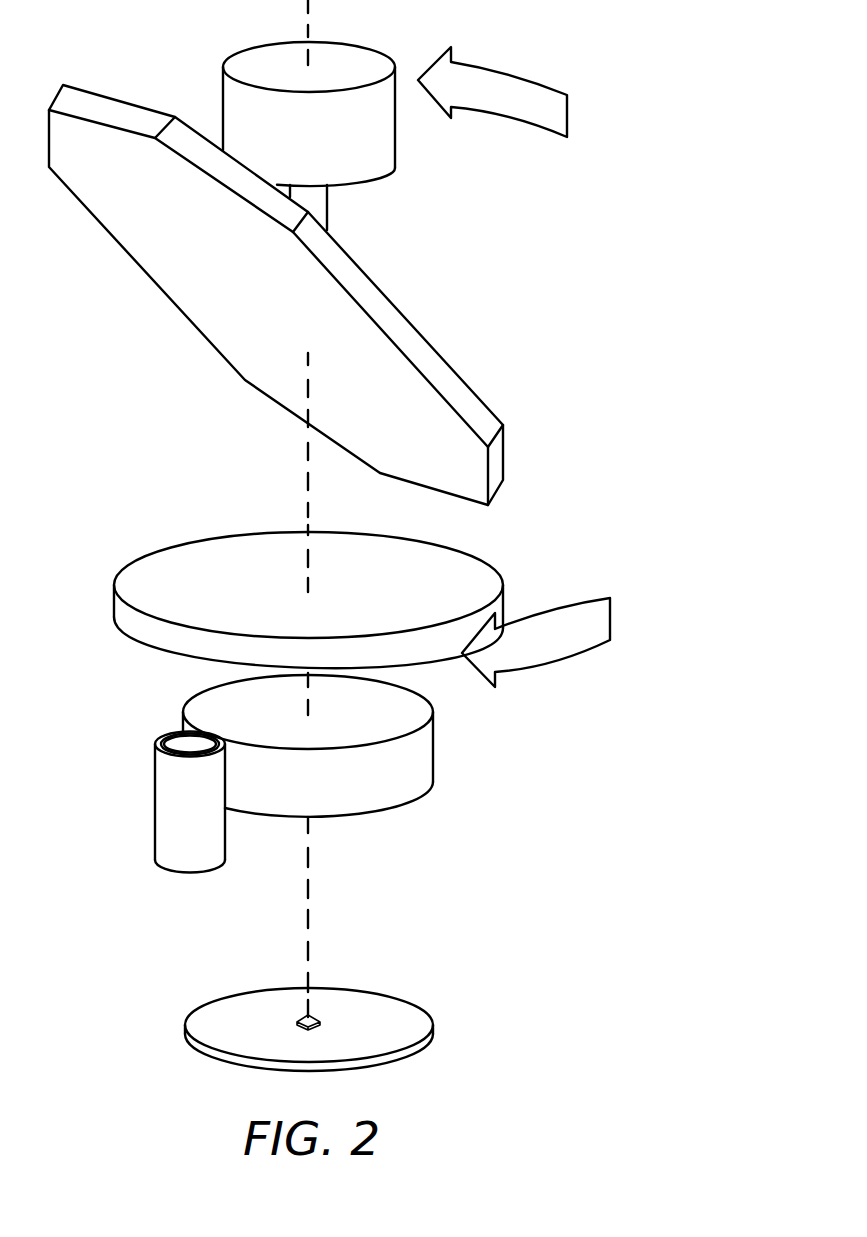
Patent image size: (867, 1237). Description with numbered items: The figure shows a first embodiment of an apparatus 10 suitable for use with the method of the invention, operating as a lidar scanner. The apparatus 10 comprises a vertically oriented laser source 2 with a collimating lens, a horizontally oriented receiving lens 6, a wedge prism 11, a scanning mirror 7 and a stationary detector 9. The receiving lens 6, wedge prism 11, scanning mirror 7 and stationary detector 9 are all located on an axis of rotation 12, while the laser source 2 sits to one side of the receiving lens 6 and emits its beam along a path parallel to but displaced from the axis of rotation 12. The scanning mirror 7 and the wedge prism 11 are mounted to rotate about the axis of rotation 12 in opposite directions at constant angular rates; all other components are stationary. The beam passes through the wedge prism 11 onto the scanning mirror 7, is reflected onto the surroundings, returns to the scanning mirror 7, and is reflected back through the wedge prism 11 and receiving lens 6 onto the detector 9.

The laser source 2 is at (155, 793).
The receiving lens 6 is at (433, 748).
The scanning mirror 7 is at (413, 318).
The stationary detector 9 is at (313, 1016).
The apparatus 10 is at (90, 401).
The wedge prism 11 is at (114, 597).
The axis of rotation 12 is at (308, 898).